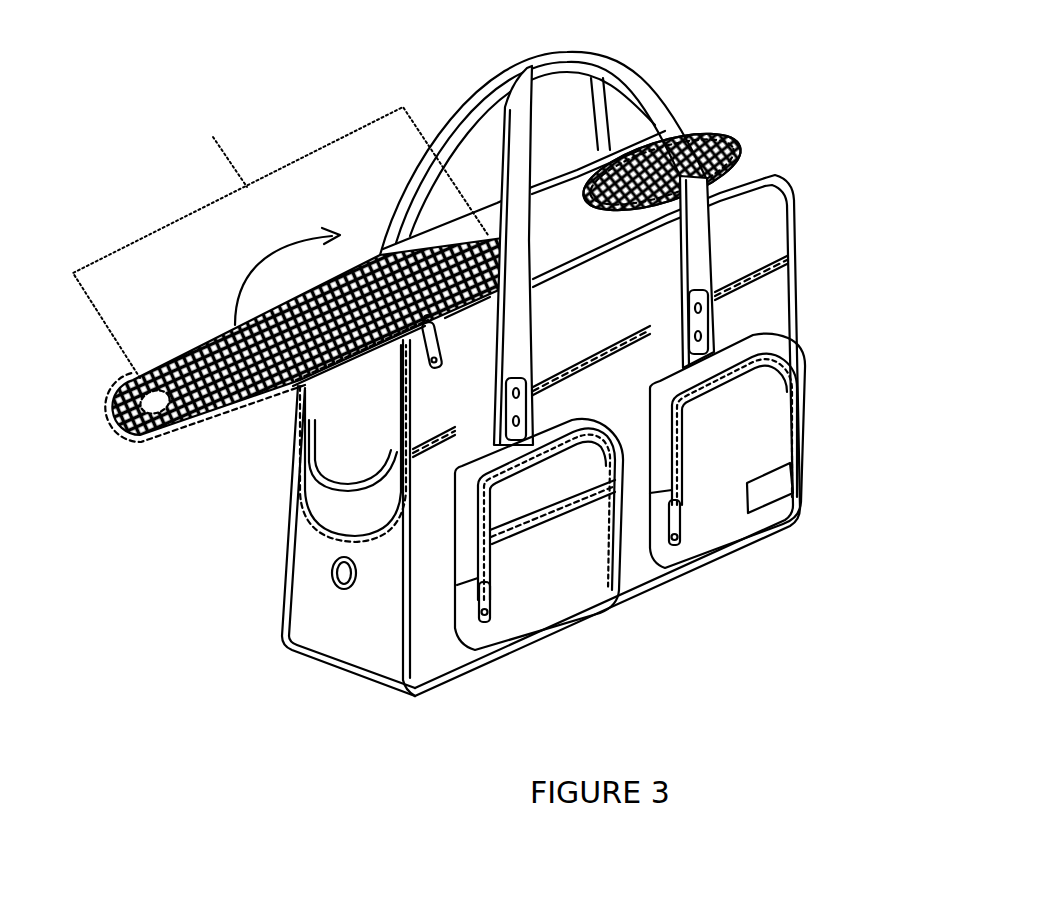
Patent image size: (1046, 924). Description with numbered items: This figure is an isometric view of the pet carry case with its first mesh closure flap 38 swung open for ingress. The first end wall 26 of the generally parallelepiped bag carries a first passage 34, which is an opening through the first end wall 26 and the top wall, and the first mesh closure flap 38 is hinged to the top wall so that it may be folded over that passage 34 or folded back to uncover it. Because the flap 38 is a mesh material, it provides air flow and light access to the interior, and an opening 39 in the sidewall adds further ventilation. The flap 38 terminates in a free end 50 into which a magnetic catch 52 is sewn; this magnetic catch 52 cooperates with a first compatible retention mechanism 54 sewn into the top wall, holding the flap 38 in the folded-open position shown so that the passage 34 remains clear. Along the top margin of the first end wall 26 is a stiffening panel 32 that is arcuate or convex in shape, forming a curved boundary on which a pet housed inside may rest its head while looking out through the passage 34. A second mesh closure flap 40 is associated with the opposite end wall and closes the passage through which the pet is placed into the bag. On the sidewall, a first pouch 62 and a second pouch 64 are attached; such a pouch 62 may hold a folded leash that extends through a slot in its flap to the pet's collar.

The first end wall 26 is at (353, 643).
The stiffening panel 32 is at (325, 483).
The first passage 34 is at (364, 423).
The first mesh closure flap 38 is at (205, 338).
The opening 39 is at (330, 577).
The second mesh closure flap 40 is at (722, 152).
The free end 50 is at (135, 441).
The magnetic catch 52 is at (118, 404).
The first compatible retention mechanism 54 is at (468, 237).
The first pouch 62 is at (563, 597).
The second pouch 64 is at (787, 430).